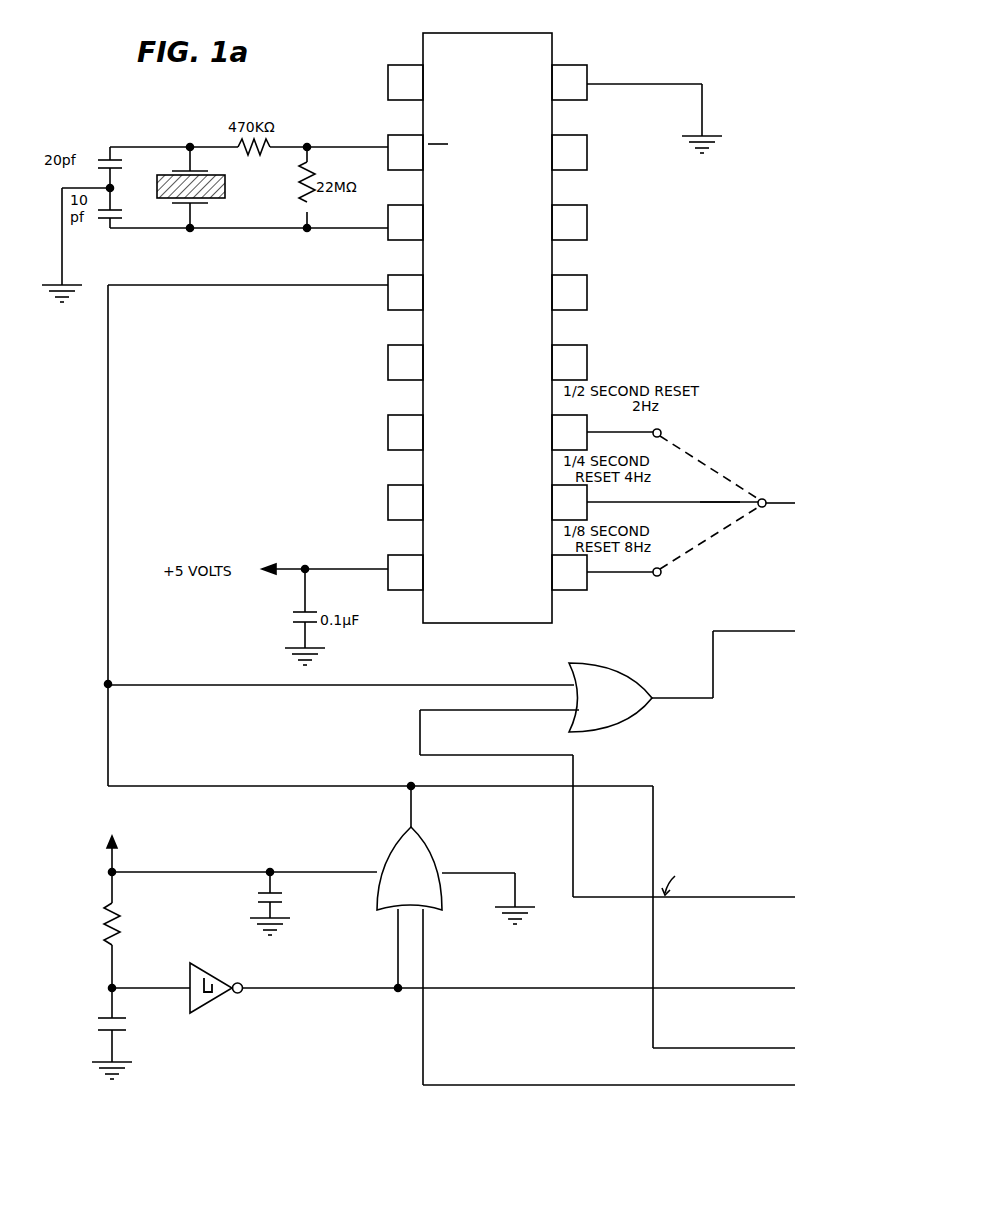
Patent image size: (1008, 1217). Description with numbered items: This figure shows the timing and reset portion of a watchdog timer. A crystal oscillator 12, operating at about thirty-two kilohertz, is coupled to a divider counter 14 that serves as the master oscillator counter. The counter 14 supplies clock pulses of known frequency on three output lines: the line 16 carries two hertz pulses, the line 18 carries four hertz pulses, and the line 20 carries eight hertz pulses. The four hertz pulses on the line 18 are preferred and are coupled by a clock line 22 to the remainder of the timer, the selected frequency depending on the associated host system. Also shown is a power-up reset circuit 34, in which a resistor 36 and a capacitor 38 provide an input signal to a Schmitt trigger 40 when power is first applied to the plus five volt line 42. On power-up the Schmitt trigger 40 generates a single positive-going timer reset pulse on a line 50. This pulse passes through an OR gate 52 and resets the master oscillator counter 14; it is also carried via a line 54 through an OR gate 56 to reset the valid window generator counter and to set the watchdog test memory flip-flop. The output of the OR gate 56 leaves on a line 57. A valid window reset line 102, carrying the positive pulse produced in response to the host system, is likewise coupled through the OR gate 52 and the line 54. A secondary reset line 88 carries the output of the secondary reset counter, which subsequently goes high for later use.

The crystal oscillator 12 is at (191, 128).
The divider counter 14 is at (494, 195).
The line 16 is at (657, 429).
The line 18 is at (732, 503).
The line 20 is at (642, 572).
The clock line 22 is at (778, 500).
The power-up reset circuit 34 is at (215, 870).
The resistor 36 is at (104, 923).
The capacitor 38 is at (100, 1024).
The Schmitt trigger 40 is at (220, 999).
The plus 5 volt line 42 is at (113, 863).
The line 50 is at (348, 990).
The OR gate 52 is at (425, 850).
The line 54 is at (413, 800).
The OR gate 56 is at (608, 672).
The OR gate output line 57 is at (713, 652).
The line 88 is at (746, 898).
The valid window reset line 102 is at (602, 1085).